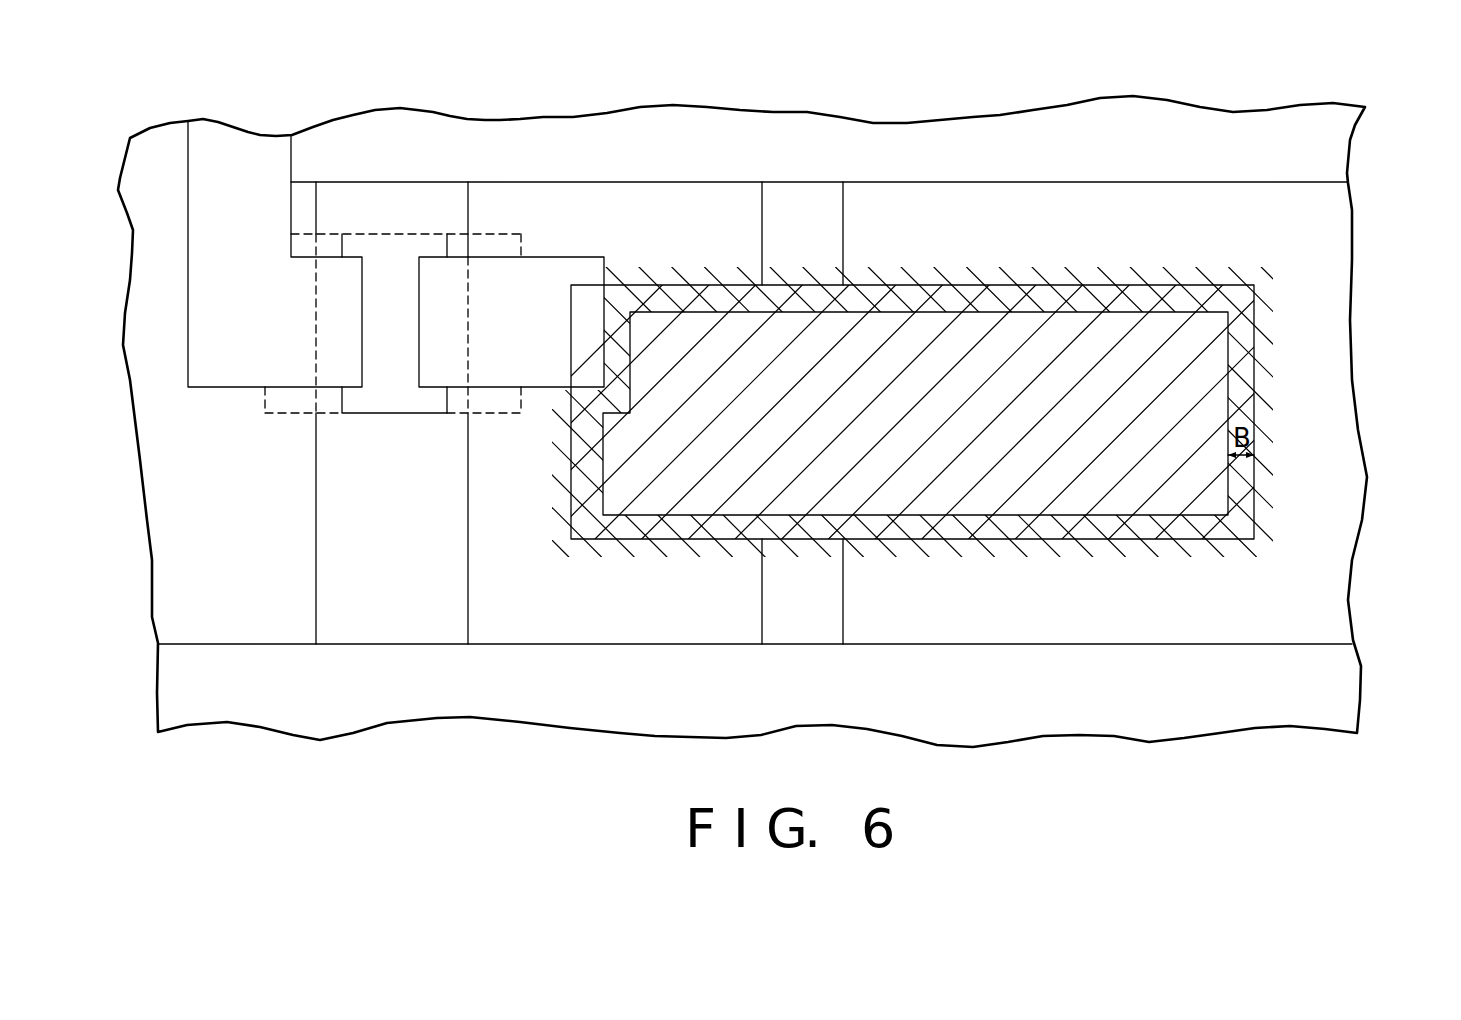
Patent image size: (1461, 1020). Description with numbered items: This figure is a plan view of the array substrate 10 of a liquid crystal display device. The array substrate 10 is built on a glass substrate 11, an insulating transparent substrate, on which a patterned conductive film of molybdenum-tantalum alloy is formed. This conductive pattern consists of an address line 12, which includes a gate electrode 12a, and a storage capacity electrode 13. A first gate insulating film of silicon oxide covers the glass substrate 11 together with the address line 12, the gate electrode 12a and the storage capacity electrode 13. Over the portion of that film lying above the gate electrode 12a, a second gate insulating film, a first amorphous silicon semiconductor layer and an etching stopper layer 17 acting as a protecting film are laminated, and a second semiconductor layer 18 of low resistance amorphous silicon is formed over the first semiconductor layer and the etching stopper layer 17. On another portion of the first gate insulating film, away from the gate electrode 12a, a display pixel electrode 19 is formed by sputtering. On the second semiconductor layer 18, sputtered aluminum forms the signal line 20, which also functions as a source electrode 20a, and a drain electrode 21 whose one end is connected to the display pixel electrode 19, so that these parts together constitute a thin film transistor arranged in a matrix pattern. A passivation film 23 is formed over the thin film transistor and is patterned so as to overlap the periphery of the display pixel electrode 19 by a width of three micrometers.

The array substrate 10 is at (1383, 310).
The glass substrate 11 is at (1218, 132).
The address line 12 is at (405, 622).
The gate electrode 12a is at (456, 246).
The storage capacity electrode 13 is at (810, 625).
The etching stopper layer 17 is at (387, 393).
The second semiconductor layer 18 is at (327, 400).
The display pixel electrode 19 is at (1072, 353).
The signal line 20 is at (208, 195).
The source electrode 20a is at (313, 360).
The drain electrode 21 is at (512, 367).
The passivation film 23 is at (1112, 593).